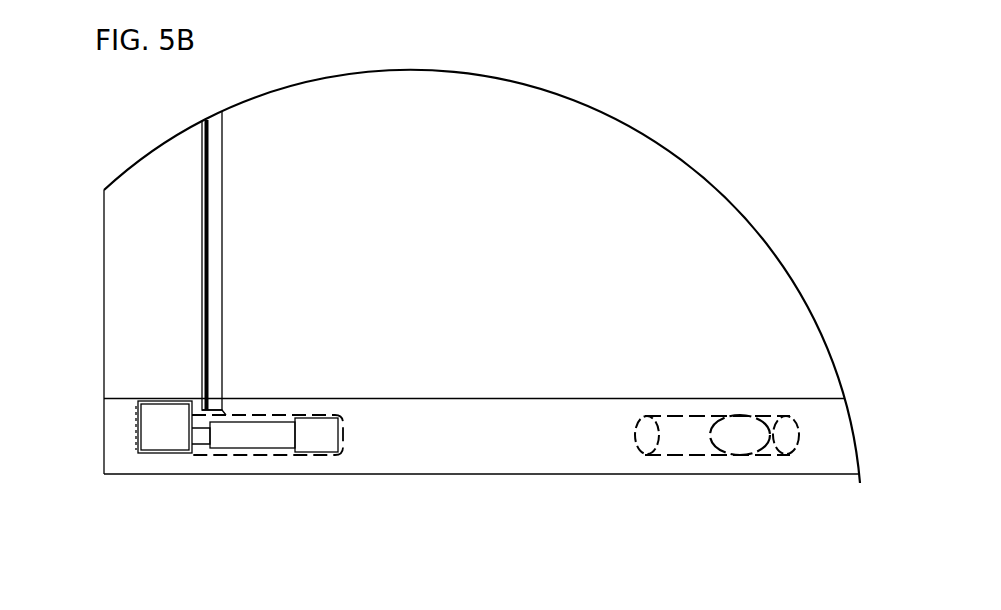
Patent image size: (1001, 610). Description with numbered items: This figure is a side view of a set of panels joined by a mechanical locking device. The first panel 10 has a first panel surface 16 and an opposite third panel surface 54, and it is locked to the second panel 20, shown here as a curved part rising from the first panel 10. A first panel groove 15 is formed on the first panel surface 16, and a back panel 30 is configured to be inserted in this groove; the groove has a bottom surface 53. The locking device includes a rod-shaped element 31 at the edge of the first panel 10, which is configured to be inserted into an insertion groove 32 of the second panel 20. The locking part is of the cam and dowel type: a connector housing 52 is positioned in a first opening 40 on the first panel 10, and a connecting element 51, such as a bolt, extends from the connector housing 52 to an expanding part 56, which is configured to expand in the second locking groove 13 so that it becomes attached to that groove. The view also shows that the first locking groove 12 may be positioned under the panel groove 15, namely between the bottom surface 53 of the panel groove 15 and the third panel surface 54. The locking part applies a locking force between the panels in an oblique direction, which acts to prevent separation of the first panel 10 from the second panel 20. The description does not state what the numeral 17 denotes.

The first panel 10 is at (440, 371).
The first locking groove 12 is at (222, 420).
The second locking groove 13 is at (296, 478).
The first panel groove 15 is at (218, 408).
The first panel surface 16 is at (528, 398).
The side surface of base 17 is at (103, 442).
The second panel 20 is at (639, 247).
The back panel 30 is at (207, 265).
The rod-shaped element 31 is at (690, 440).
The insertion groove 32 is at (770, 456).
The first opening 40 is at (120, 425).
The connecting element 51 is at (238, 438).
The connector housing 52 is at (163, 433).
The bottom surface 53 is at (215, 423).
The third panel surface 54 is at (550, 474).
The expanding part 56 is at (318, 446).